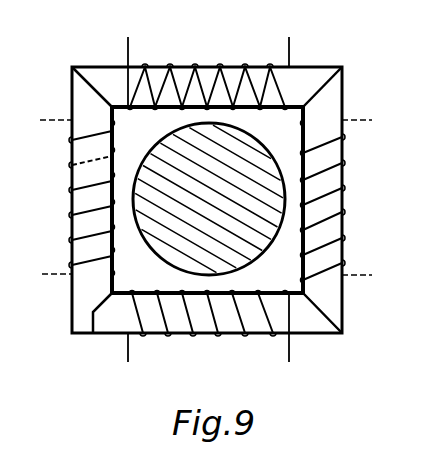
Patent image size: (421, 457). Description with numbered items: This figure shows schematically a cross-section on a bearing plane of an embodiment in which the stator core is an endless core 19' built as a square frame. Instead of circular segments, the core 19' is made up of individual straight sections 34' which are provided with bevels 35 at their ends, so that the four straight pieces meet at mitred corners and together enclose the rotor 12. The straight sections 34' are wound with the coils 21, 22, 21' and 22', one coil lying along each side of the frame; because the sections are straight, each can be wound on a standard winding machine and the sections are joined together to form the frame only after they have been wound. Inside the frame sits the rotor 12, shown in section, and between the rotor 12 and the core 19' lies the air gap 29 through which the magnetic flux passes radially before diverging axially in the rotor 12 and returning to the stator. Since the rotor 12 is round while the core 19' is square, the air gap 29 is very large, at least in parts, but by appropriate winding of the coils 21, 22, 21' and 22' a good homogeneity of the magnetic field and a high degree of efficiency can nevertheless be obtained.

The endless core 19' is at (227, 195).
The rotor 12 is at (192, 243).
The air gap 29 is at (143, 117).
The coil 21 is at (72, 254).
The coil 21' is at (208, 65).
The coil 22 is at (350, 202).
The coil 22' is at (209, 339).
The straight section 34' is at (214, 199).
The bevel 35 is at (313, 94).